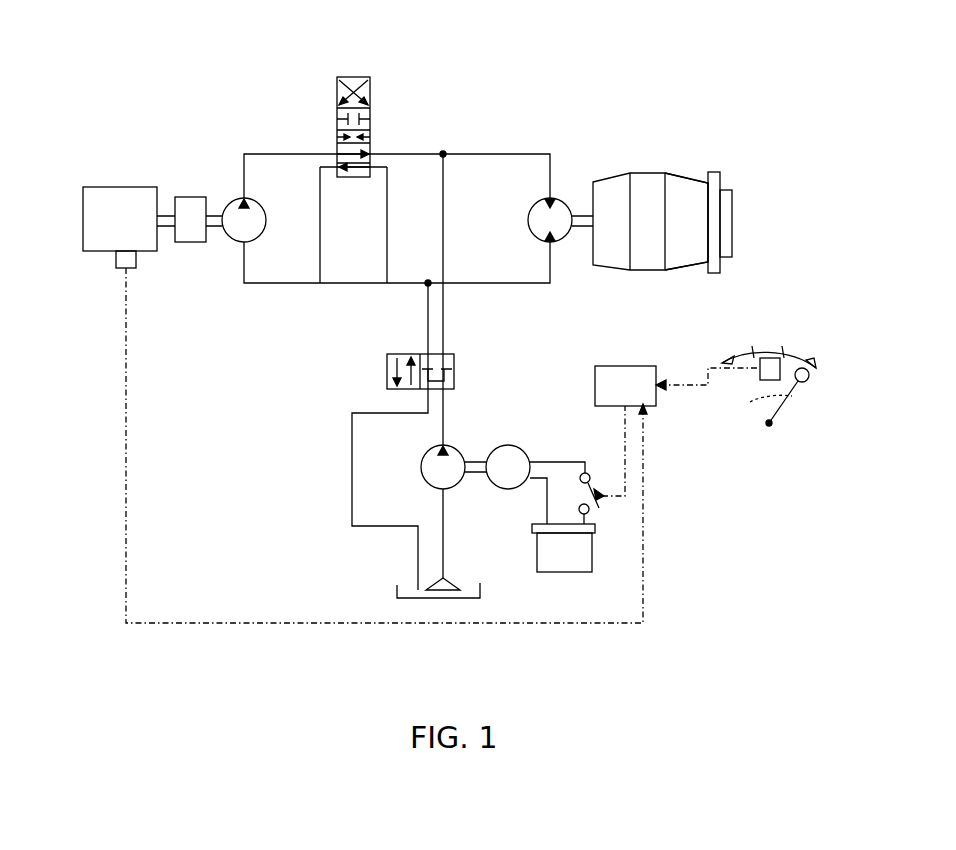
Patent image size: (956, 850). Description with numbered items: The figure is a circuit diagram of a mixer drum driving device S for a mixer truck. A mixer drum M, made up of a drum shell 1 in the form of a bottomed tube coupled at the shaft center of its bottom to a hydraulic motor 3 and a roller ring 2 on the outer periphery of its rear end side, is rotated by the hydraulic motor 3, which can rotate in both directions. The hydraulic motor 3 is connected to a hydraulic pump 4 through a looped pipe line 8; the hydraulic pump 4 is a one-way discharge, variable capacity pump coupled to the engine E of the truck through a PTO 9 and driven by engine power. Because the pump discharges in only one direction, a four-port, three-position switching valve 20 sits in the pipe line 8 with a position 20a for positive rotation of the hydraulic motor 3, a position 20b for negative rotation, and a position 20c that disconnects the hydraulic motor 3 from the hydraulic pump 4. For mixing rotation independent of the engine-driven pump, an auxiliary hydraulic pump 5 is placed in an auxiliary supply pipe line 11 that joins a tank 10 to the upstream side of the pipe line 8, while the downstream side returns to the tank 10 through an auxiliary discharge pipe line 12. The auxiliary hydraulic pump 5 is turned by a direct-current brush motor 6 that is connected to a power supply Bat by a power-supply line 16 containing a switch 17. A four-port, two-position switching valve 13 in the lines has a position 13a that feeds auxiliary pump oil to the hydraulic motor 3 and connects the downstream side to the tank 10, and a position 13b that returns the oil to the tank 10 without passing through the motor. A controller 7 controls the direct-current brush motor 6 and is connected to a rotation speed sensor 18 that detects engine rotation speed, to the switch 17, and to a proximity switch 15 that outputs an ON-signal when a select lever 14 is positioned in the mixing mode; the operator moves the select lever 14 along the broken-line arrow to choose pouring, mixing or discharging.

The mixer drum driving device S is at (100, 152).
The engine E is at (130, 186).
The PTO 9 is at (190, 196).
The hydraulic pump 4 is at (232, 242).
The pipe line 8 is at (486, 152).
The hydraulic motor 3 is at (528, 208).
The drum shell 1 is at (604, 182).
The mixer drum M is at (684, 182).
The roller ring 2 is at (720, 178).
The switching valve 20 is at (340, 76).
The position 20a is at (348, 178).
The position 20b is at (370, 80).
The position 20c is at (337, 112).
The auxiliary supply pipe line 11 is at (448, 312).
The auxiliary discharge pipe line 12 is at (352, 420).
The switching valve 13 is at (387, 358).
The position 13a is at (398, 354).
The position 13b is at (454, 372).
The auxiliary hydraulic pump 5 is at (424, 454).
The direct-current brush motor 6 is at (498, 487).
The tank 10 is at (398, 588).
The power-supply line 16 is at (553, 460).
The switch 17 is at (590, 470).
The power supply Bat is at (548, 572).
The controller 7 is at (604, 366).
The proximity switch 15 is at (760, 380).
The select lever 14 is at (806, 382).
The rotation speed sensor 18 is at (116, 264).